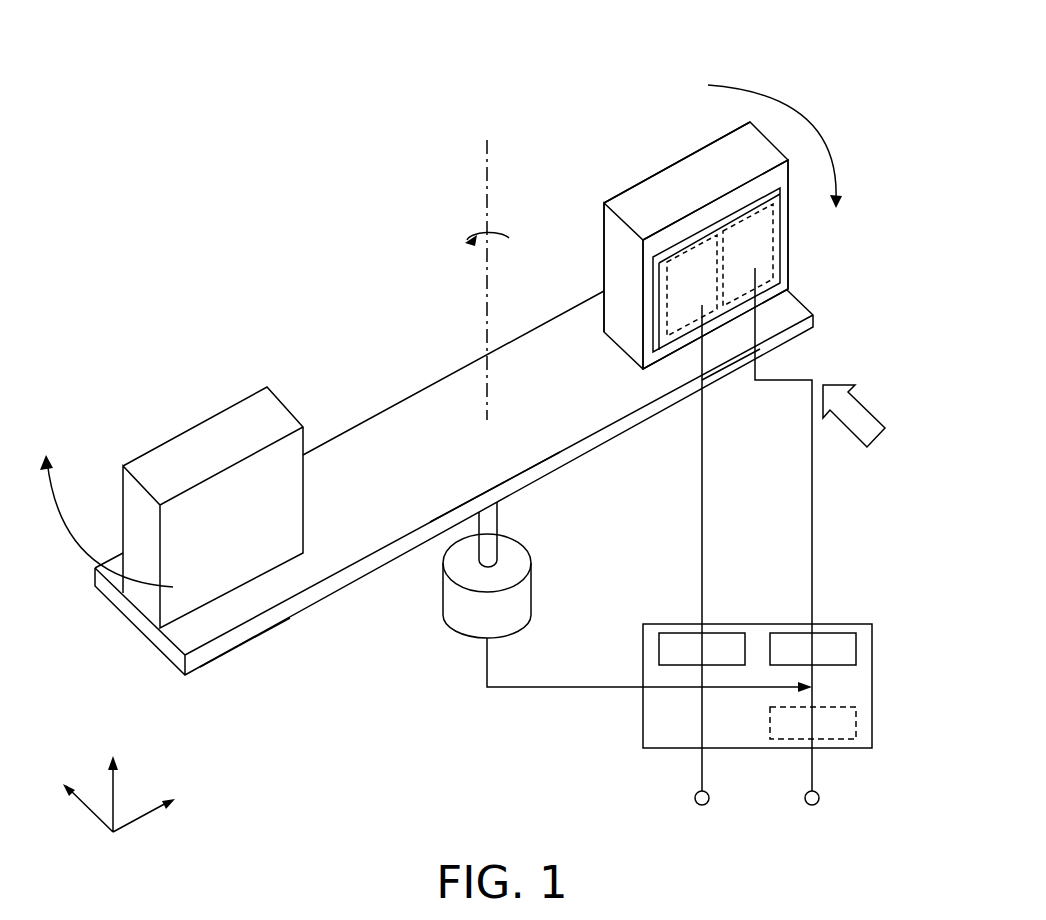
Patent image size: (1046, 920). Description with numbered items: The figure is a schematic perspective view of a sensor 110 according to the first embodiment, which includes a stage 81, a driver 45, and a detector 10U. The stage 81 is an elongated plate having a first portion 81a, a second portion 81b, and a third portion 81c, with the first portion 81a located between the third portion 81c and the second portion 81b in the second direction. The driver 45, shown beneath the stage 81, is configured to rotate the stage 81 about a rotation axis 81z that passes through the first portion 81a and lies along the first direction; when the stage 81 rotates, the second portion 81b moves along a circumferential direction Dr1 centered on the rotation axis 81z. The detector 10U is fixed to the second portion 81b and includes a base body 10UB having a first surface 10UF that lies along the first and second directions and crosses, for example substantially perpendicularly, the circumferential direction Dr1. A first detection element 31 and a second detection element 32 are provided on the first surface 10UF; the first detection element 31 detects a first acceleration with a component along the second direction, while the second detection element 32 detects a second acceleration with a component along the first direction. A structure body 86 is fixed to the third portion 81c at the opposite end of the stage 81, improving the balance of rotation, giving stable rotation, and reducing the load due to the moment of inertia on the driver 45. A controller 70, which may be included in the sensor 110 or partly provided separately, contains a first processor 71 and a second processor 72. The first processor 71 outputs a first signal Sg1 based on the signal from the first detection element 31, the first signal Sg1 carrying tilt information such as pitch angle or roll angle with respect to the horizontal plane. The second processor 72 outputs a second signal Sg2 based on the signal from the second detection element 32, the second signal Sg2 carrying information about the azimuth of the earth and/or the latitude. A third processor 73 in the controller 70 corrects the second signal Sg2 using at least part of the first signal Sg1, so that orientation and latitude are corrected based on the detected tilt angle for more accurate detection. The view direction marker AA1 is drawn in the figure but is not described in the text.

The sensor 110 is at (918, 120).
The detector 10U is at (740, 268).
The base body 10UB is at (643, 203).
The first surface 10UF is at (775, 177).
The first detection element 31 is at (690, 325).
The second detection element 32 is at (778, 260).
The stage 81 is at (382, 555).
The first portion 81a is at (492, 423).
The second portion 81b is at (731, 322).
The third portion 81c is at (242, 590).
The rotation axis 81z is at (491, 168).
The structure body 86 is at (188, 452).
The driver 45 is at (525, 596).
The controller 70 is at (790, 659).
The first processor 71 is at (717, 632).
The second processor 72 is at (827, 632).
The third processor 73 is at (856, 727).
The first signal Sg1 is at (694, 798).
The second signal Sg2 is at (819, 797).
The circumferential direction Dr1 is at (806, 120).
The viewing direction AA1 is at (867, 407).